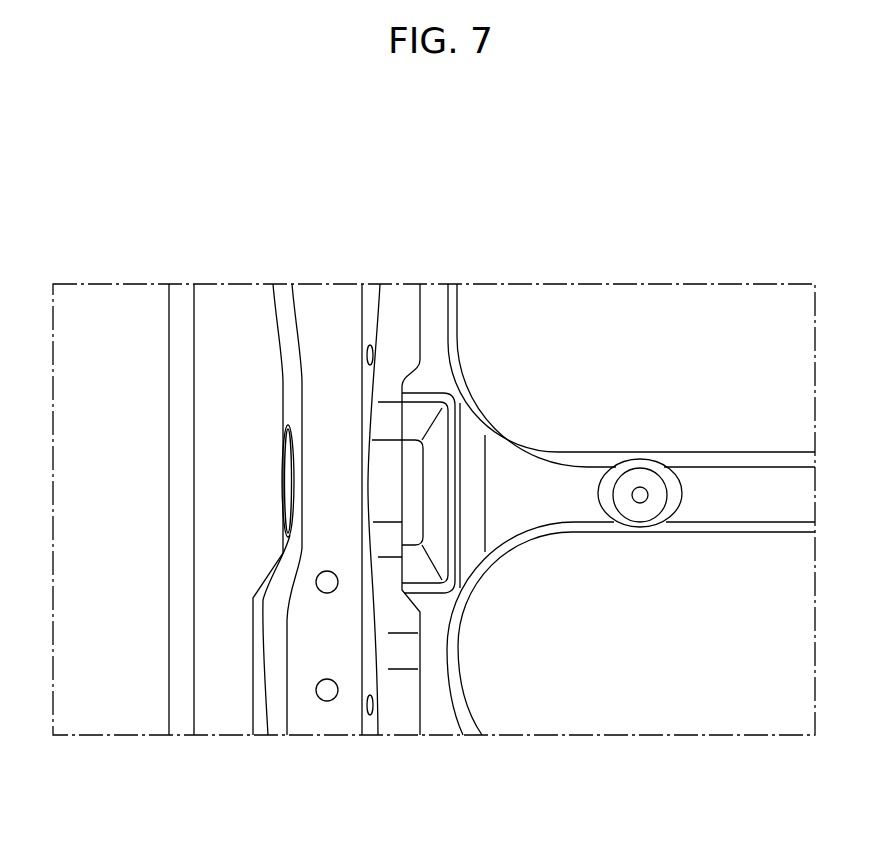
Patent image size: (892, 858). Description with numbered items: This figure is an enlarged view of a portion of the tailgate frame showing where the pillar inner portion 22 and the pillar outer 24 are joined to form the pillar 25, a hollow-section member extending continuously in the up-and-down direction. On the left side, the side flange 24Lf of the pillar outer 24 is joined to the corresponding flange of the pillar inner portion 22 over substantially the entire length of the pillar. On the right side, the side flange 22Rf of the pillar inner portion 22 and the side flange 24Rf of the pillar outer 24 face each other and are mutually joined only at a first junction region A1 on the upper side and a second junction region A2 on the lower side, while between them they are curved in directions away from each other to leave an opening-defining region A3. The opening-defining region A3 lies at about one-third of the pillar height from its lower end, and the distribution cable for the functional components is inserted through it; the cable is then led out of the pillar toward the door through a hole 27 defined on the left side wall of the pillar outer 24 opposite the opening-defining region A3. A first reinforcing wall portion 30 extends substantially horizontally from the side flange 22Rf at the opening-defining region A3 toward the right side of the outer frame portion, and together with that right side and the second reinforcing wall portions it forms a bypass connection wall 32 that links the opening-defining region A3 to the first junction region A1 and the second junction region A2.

The pillar inner portion 22 is at (631, 436).
The pillar outer 24 is at (336, 290).
The pillar 25 is at (453, 258).
The hole 27 is at (283, 445).
The first reinforcing wall portion 30 is at (691, 375).
The bypass connection wall 32 is at (742, 483).
The side flange 24Lf is at (222, 720).
The side flange 24Rf is at (390, 727).
The side flange 22Rf is at (442, 727).
The first junction region A1 is at (405, 353).
The second junction region A2 is at (407, 650).
The opening-defining region A3 is at (387, 468).